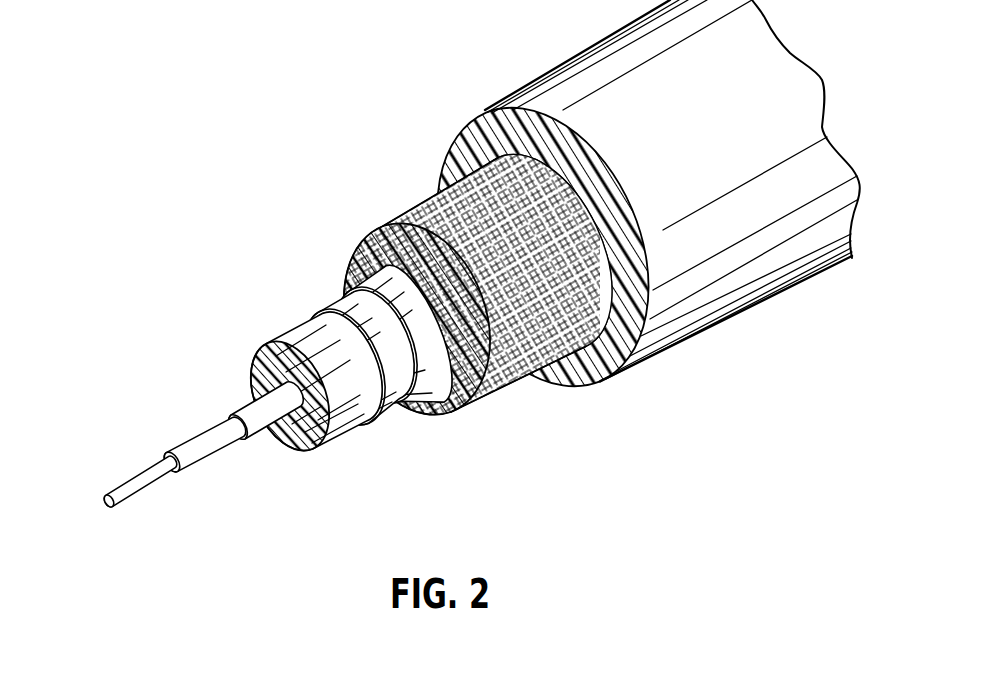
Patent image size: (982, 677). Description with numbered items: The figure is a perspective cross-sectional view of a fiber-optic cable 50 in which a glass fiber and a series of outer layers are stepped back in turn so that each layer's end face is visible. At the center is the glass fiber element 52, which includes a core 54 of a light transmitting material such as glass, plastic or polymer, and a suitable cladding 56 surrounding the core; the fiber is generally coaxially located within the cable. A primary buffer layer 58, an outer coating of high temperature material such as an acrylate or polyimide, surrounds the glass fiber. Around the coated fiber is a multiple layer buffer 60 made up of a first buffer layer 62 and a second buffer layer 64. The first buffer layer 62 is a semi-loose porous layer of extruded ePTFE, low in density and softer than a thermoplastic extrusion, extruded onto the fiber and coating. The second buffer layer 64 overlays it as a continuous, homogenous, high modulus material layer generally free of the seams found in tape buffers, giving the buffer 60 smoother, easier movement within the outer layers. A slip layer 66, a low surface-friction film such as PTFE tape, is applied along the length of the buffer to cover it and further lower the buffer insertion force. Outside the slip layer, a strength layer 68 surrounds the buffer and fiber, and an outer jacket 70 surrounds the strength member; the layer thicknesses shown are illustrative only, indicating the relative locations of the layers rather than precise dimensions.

The cable 50 is at (461, 253).
The glass fiber element 52 is at (182, 430).
The core 54 is at (139, 474).
The cladding 56 is at (204, 436).
The primary buffer layer 58 is at (243, 398).
The multiple layer buffer 60 is at (421, 324).
The first buffer layer 62 is at (275, 344).
The second buffer layer 64 is at (322, 309).
The slip layer 66 is at (350, 286).
The strength layer 68 is at (405, 211).
The outer jacket 70 is at (498, 96).